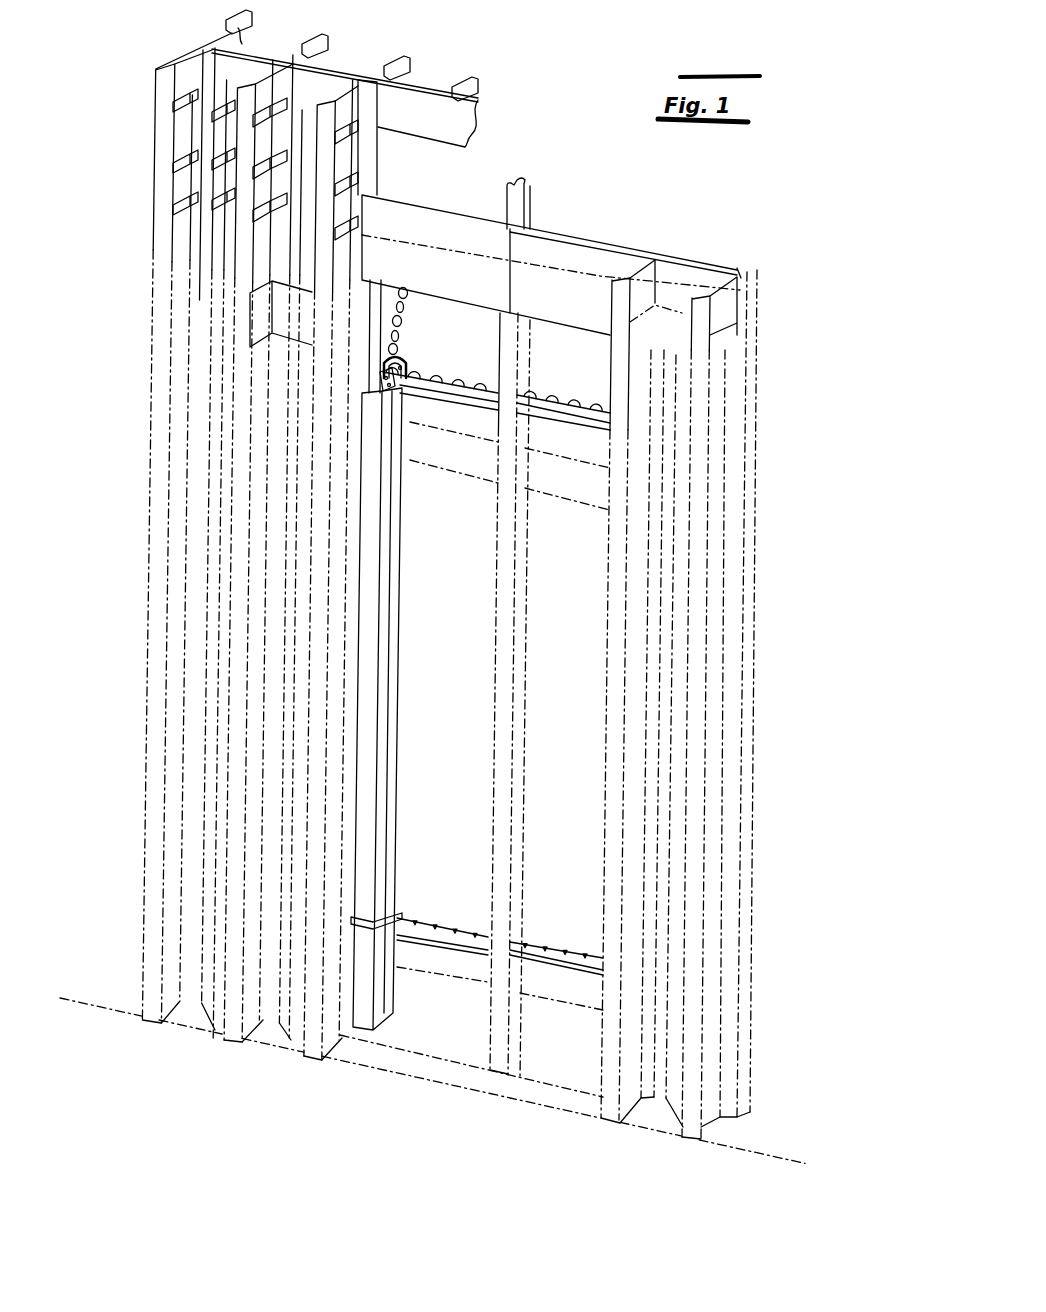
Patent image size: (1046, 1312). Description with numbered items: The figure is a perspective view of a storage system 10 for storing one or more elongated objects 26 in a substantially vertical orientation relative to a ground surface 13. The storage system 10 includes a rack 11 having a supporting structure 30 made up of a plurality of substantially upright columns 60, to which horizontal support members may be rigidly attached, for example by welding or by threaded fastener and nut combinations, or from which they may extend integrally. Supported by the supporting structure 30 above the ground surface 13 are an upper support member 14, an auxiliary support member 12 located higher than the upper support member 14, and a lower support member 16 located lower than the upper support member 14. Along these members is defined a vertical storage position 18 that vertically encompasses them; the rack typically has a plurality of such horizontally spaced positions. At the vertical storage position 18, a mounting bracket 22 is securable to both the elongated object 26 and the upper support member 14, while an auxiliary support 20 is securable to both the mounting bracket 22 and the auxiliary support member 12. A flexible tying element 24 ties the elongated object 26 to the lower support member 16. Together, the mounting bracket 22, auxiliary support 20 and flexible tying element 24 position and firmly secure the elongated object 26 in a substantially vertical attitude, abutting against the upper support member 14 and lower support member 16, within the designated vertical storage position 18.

The storage system 10 is at (730, 196).
The rack 11 is at (491, 131).
The auxiliary support member 12 is at (560, 226).
The ground surface 13 is at (392, 1078).
The upper support member 14 is at (542, 424).
The lower support member 16 is at (527, 963).
The vertical storage position 18 is at (410, 282).
The auxiliary support 20 is at (417, 300).
The mounting bracket 22 is at (414, 352).
The flexible tying element 24 is at (400, 906).
The elongated object 26 is at (405, 655).
The supporting structure 30 is at (144, 215).
The upright column 60 is at (247, 115).